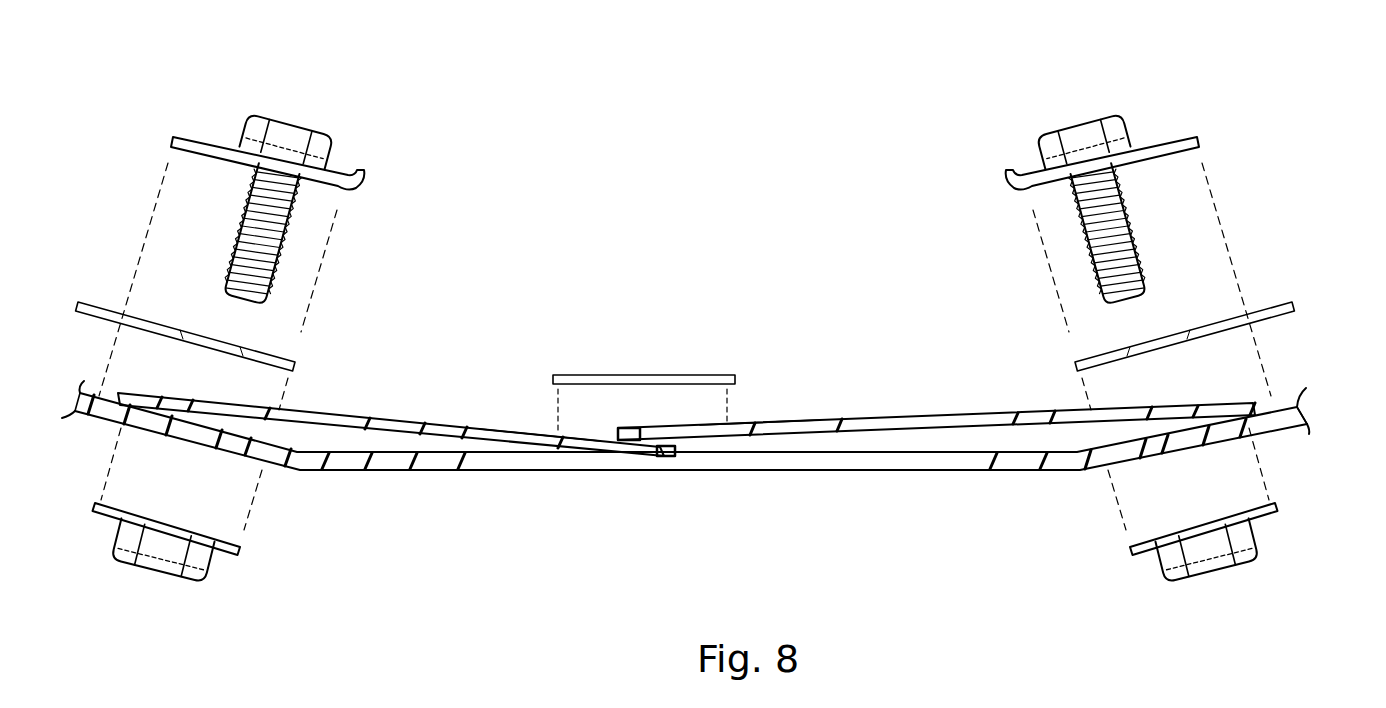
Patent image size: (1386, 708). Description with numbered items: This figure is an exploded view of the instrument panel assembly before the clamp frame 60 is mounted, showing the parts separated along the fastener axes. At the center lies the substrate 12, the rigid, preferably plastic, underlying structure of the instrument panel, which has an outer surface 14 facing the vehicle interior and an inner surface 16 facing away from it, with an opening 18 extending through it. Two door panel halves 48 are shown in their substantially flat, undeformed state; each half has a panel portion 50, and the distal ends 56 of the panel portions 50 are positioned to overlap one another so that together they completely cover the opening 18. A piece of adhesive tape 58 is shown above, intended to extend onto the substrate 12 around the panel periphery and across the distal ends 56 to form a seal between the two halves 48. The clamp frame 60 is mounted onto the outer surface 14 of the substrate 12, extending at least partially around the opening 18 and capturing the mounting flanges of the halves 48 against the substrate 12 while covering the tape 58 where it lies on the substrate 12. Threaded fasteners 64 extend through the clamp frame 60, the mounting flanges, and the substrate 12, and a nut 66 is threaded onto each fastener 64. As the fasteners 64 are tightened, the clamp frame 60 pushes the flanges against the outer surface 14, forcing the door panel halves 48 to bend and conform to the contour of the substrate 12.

The substrate 12 is at (1298, 428).
The outer surface 14 is at (1283, 408).
The inner surface 16 is at (1273, 432).
The opening 18 is at (794, 456).
The door panel halves 48 is at (378, 405).
The panel portion 50 is at (527, 430).
The distal ends 56 is at (632, 428).
The adhesive tape 58 is at (102, 302).
The clamp frame 60 is at (337, 168).
The threaded fasteners 64 is at (288, 140).
The nut 66 is at (160, 552).